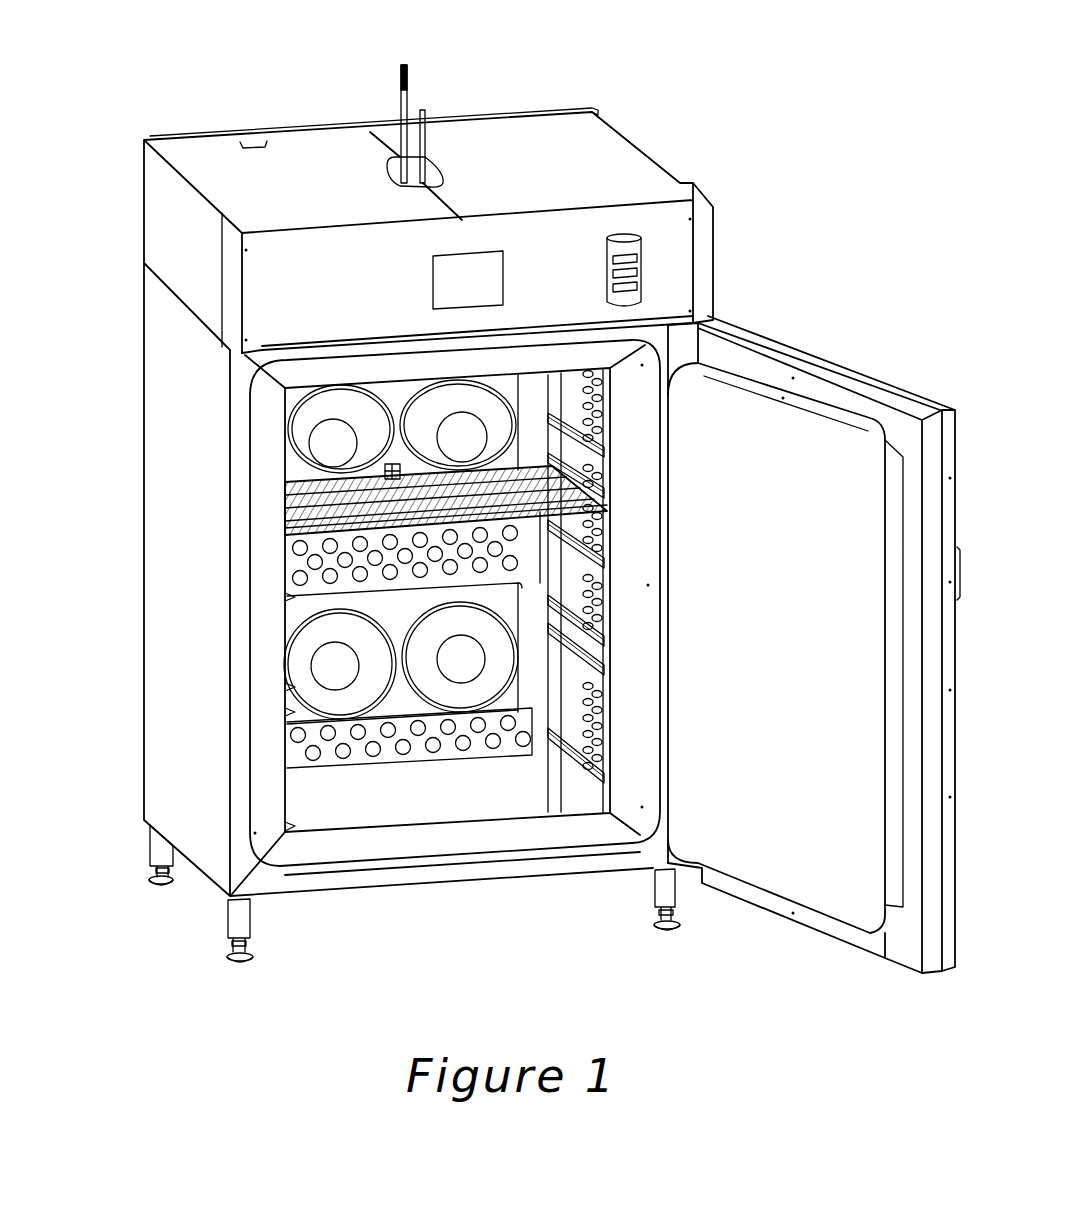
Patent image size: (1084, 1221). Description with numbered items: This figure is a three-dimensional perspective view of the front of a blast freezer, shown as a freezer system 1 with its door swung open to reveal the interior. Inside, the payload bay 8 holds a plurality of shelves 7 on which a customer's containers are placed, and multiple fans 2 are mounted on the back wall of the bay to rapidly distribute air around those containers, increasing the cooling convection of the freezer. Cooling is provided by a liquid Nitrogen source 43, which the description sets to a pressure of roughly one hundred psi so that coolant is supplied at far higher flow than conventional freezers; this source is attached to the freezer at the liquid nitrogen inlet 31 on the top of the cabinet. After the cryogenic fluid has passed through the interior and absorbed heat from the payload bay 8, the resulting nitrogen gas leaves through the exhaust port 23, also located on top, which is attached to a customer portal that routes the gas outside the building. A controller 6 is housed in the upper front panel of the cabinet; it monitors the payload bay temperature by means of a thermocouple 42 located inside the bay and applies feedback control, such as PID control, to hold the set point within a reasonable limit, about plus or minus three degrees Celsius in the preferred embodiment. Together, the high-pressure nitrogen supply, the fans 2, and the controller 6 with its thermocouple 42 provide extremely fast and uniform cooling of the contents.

The freezer system 1 is at (180, 503).
The fans 2 is at (462, 655).
The controller 6 is at (472, 285).
The shelves 7 is at (290, 545).
The payload bay 8 is at (450, 780).
The exhaust port 23 is at (427, 140).
The liquid nitrogen inlet 31 is at (397, 116).
The thermocouple 42 is at (390, 475).
The liquid Nitrogen source 43 is at (408, 88).